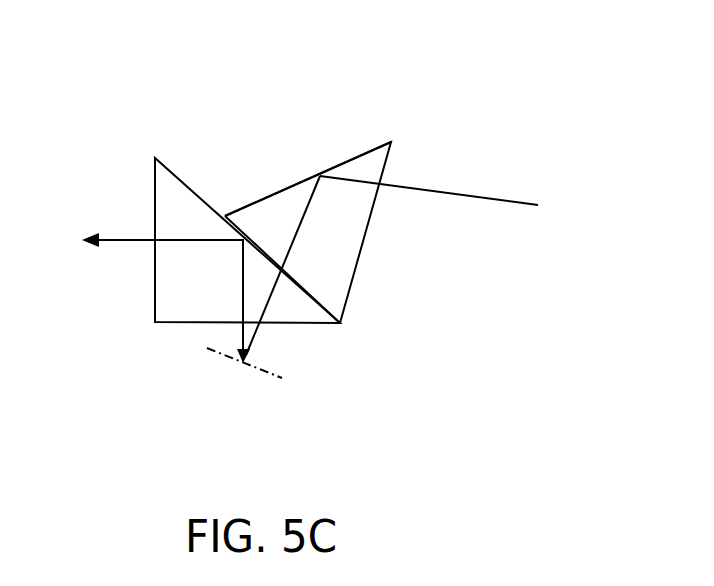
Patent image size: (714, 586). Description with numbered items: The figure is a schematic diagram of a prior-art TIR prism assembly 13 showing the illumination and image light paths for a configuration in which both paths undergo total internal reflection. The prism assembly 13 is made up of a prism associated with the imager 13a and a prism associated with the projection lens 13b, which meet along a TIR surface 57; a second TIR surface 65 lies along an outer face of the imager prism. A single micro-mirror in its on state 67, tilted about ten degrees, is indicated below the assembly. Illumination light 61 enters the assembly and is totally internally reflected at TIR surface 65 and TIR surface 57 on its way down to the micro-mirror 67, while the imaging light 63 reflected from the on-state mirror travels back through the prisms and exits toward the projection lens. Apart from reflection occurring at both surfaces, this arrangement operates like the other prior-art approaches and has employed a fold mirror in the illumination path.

The prism assembly 13 is at (100, 108).
The prism associated with imager 13a is at (333, 235).
The prism associated with projection lens 13b is at (182, 300).
The TIR surface 57 is at (187, 183).
The illumination light 61 is at (433, 188).
The imaging light 63 is at (128, 233).
The TIR surface 65 is at (344, 162).
The single micro-mirror in its "on" state 67 is at (270, 377).